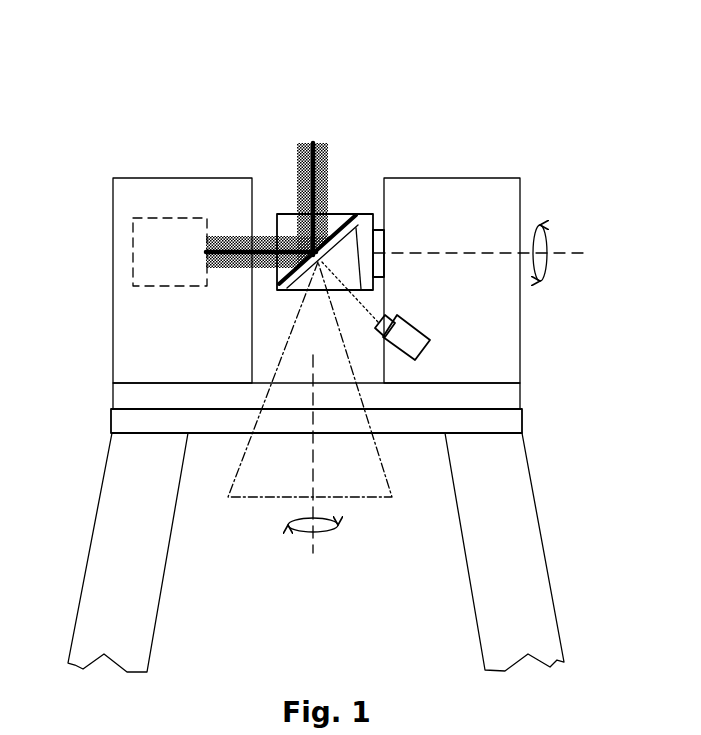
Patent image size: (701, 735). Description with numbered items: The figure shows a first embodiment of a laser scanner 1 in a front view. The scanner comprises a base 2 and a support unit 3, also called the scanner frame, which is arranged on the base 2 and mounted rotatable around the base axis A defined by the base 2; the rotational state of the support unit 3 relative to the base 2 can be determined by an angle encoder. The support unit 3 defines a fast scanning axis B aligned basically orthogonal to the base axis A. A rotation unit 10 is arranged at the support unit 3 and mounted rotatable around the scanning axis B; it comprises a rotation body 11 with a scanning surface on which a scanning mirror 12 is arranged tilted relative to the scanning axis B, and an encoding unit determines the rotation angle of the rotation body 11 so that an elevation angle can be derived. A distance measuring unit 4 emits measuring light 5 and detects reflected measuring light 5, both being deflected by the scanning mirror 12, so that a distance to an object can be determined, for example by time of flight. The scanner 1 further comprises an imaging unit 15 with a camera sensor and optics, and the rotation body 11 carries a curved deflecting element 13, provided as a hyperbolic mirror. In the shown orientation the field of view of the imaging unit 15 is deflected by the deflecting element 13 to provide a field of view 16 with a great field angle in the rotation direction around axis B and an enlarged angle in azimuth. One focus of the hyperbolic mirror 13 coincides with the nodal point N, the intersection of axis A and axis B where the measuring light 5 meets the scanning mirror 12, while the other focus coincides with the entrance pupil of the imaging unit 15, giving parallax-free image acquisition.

The laser scanner 1 is at (129, 72).
The base 2 is at (502, 392).
The support unit 3 is at (128, 188).
The distance measuring unit 4 is at (148, 235).
The measuring light 5 is at (313, 238).
The nodal point N is at (311, 246).
The rotation unit 10 is at (366, 186).
The rotation body 11 is at (350, 220).
The scanning mirror 12 is at (337, 220).
The curved deflecting element 13 is at (325, 263).
The imaging unit 15 is at (405, 337).
The field of view 16 is at (362, 473).
The base axis A is at (312, 540).
The scanning axis B is at (557, 250).